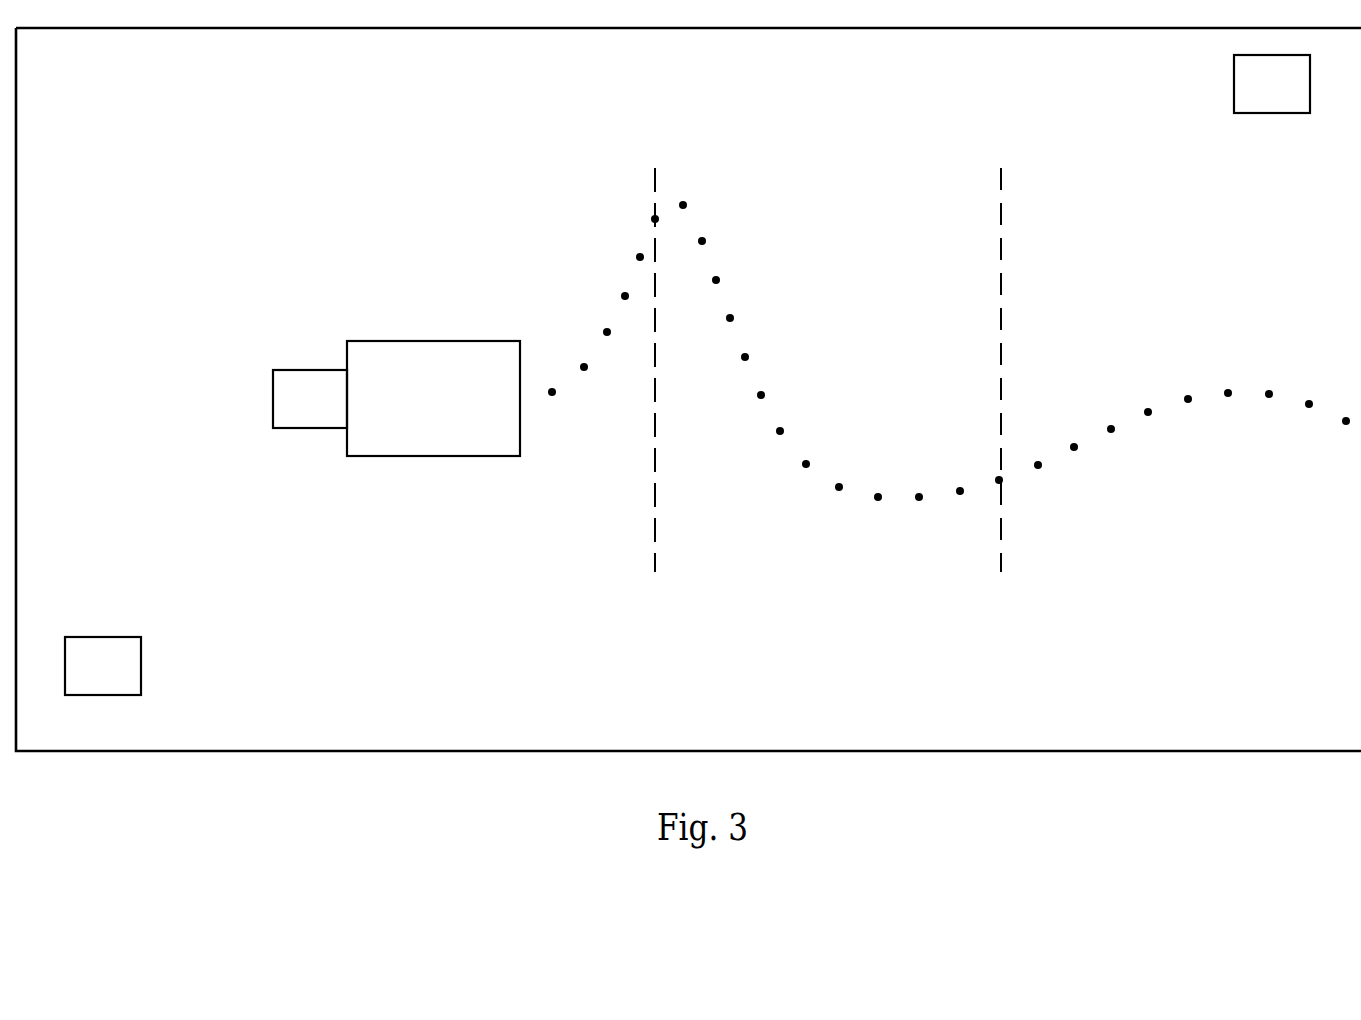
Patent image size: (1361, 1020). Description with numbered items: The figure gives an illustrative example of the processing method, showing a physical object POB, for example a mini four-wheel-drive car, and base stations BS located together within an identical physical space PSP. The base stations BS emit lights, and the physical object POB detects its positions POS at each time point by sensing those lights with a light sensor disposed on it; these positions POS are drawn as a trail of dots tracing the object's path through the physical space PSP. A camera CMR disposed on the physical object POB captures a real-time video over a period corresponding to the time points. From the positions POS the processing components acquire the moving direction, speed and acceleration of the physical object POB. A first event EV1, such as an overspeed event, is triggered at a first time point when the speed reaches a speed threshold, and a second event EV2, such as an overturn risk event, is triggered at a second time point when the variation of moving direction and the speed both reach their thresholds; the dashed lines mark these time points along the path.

The physical space PSP is at (180, 137).
The base stations BS is at (118, 678).
The camera CMR is at (338, 410).
The physical object POB is at (458, 410).
The positions POS is at (724, 277).
The first event EV1 is at (1004, 390).
The second event EV2 is at (663, 389).